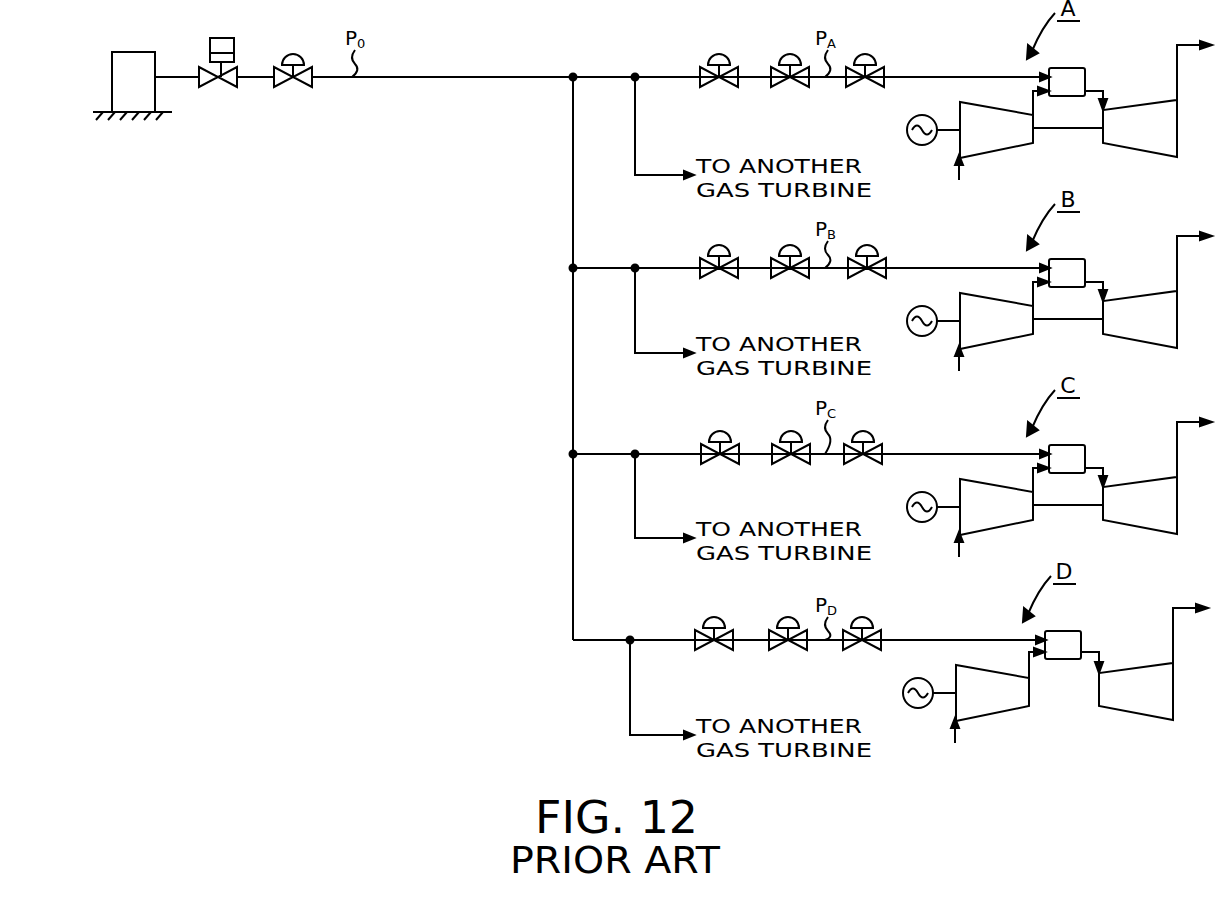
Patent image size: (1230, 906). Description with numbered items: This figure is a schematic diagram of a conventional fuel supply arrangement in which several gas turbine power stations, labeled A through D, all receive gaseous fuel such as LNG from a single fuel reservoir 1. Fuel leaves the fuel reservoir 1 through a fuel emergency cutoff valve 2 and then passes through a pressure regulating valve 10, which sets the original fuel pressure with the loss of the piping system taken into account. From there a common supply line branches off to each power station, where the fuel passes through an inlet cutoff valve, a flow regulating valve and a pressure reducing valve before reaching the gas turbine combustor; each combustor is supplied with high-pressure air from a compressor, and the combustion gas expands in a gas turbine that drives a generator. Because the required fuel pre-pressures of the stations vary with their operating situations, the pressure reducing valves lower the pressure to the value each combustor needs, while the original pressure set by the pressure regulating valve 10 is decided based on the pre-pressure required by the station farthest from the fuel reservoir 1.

The fuel reservoir 1 is at (145, 122).
The fuel emergency cutoff valve 2 is at (224, 87).
The pressure regulating valve 10 is at (300, 87).